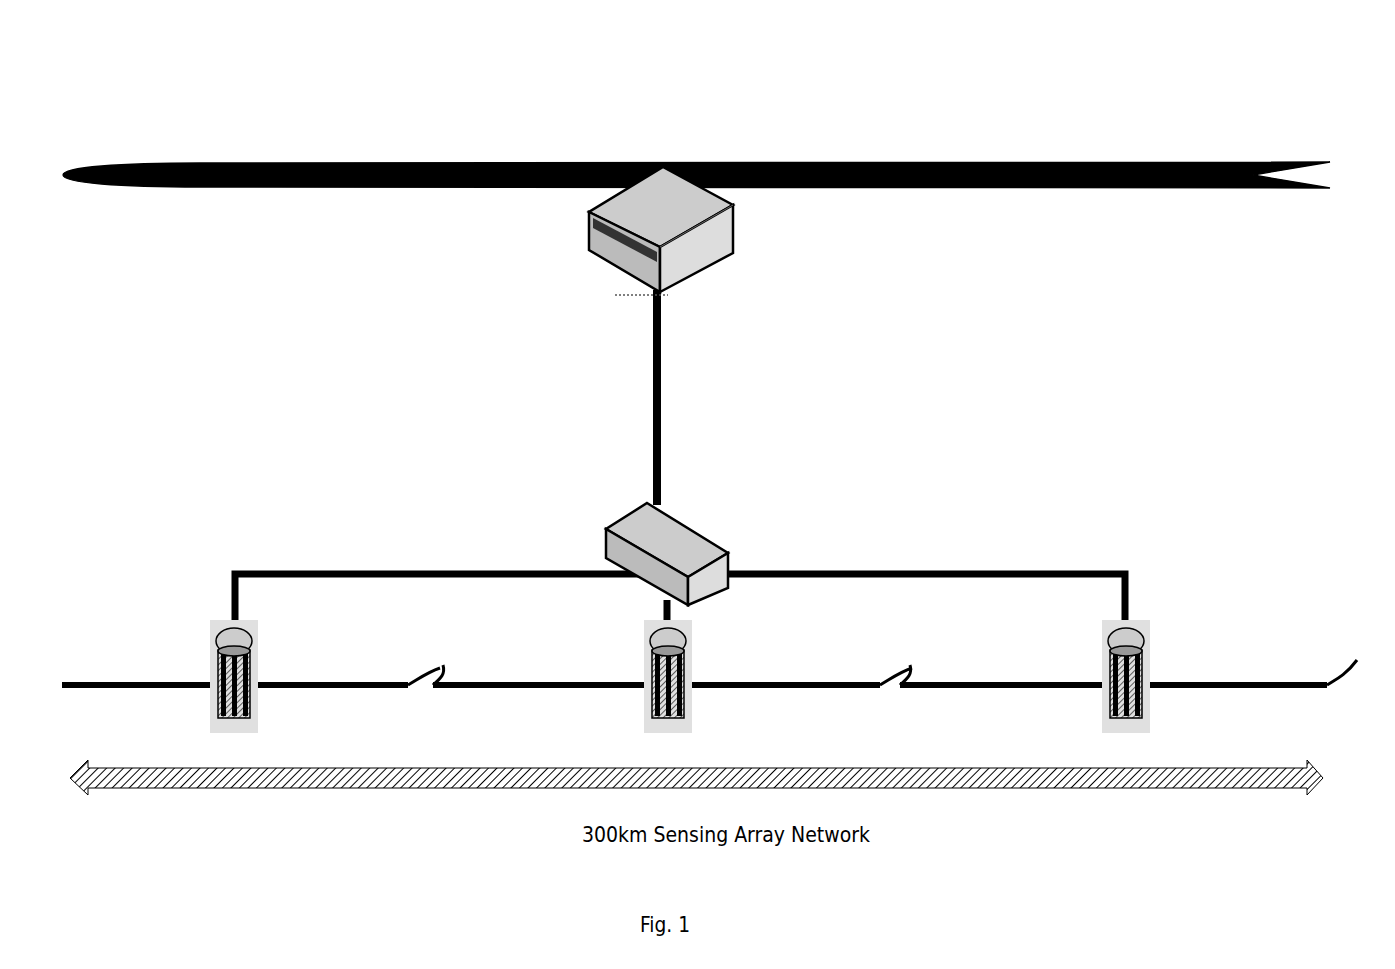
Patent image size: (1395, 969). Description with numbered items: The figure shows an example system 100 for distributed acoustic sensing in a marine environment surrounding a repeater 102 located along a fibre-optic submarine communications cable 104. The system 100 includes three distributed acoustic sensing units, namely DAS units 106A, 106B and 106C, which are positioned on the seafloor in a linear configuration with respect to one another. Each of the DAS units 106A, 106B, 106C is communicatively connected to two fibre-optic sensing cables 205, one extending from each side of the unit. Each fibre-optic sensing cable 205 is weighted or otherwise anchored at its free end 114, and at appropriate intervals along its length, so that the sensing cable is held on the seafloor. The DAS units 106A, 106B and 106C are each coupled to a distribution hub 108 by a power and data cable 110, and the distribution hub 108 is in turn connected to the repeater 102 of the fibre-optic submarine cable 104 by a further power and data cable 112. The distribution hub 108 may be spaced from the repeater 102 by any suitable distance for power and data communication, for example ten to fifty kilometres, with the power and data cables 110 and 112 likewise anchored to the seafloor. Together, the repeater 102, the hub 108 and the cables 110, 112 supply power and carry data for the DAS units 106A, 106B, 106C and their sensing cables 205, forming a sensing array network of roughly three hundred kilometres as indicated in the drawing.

The system for distributed acoustic sensing 100 is at (1158, 106).
The repeater 102 is at (735, 215).
The fibre-optic submarine communications cable 104 is at (1260, 163).
The distributed acoustic sensing unit 106A is at (258, 632).
The distributed acoustic sensing unit 106B is at (693, 650).
The distributed acoustic sensing unit 106C is at (1152, 625).
The distribution hub 108 is at (712, 532).
The power and data cable 110 is at (367, 573).
The power and data cable 112 is at (662, 355).
The free end 114 is at (70, 685).
The fibre-optic sensing cable 205 is at (280, 685).